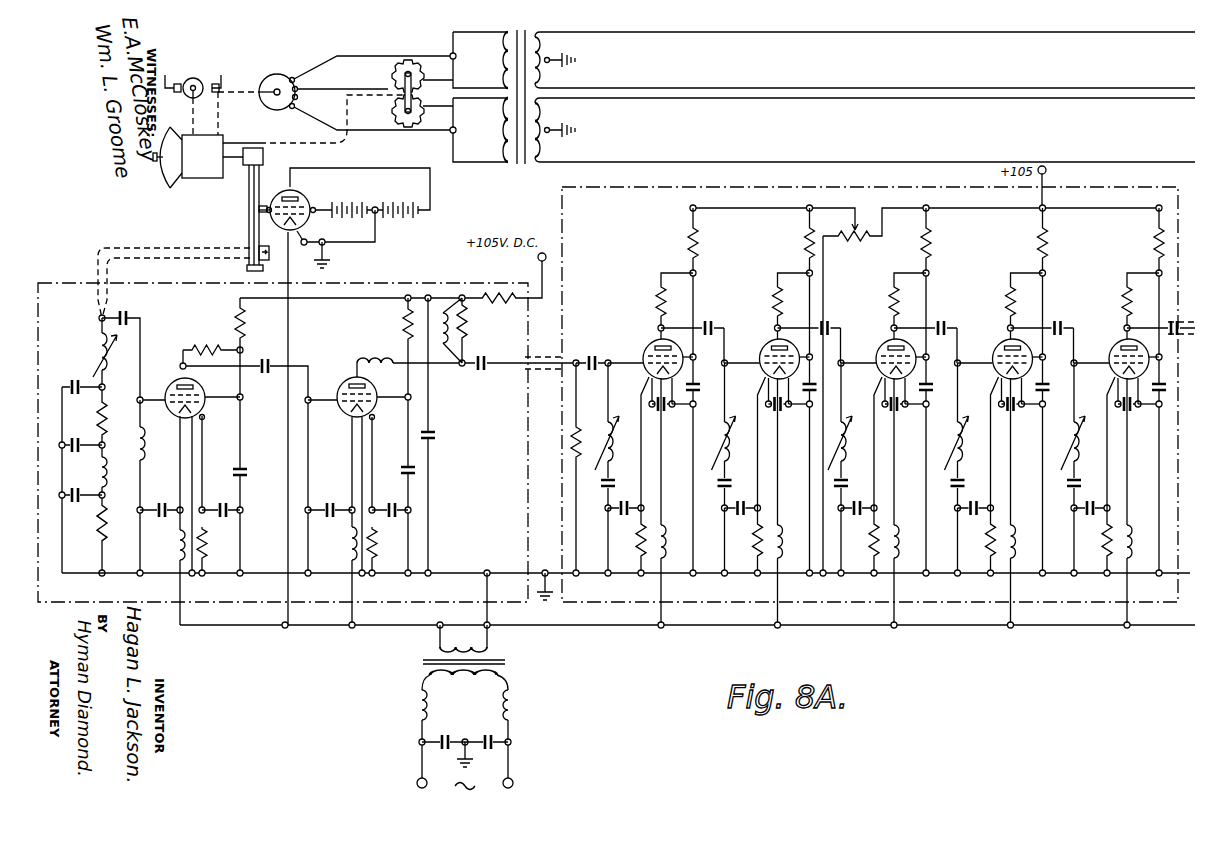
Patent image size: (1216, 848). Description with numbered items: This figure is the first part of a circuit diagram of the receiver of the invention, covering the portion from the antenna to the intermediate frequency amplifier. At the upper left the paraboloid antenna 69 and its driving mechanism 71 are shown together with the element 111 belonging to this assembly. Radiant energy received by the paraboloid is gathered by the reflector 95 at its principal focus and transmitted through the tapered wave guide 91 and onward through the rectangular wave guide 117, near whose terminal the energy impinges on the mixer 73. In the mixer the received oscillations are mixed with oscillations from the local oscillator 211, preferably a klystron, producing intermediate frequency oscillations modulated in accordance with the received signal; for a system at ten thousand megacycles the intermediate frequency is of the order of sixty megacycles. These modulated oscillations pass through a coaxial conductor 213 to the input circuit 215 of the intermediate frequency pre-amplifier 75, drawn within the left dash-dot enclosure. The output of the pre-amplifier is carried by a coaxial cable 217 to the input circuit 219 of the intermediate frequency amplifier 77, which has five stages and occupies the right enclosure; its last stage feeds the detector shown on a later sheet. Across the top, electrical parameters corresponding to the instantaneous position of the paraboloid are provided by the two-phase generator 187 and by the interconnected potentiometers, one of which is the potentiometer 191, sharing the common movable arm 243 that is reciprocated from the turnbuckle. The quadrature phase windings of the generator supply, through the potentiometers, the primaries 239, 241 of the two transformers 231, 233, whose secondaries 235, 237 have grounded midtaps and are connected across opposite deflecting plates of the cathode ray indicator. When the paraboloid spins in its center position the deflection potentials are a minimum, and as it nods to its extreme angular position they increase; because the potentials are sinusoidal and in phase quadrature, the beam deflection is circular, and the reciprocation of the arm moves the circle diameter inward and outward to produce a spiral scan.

The pickup transmitter 111 is at (193, 77).
The driving mechanism 71 is at (245, 69).
The two-phase generator 187 is at (287, 67).
The potentiometer 191 is at (383, 70).
The common movable arm 243 is at (386, 108).
The primary winding 241 is at (503, 61).
The primary winding 239 is at (503, 134).
The transformer 233 is at (540, 31).
The secondary winding 237 is at (550, 79).
The secondary winding 235 is at (550, 150).
The transformer 231 is at (525, 192).
The reflector 95 is at (160, 129).
The tapered wave guide 91 is at (163, 171).
The antenna 69 is at (176, 185).
The rectangular wave guide 117 is at (264, 153).
The local oscillator 211 is at (308, 196).
The coaxial conductor 213 is at (172, 239).
The mixer 73 is at (248, 248).
The input circuit 215 is at (176, 450).
The intermediate frequency pre-amplifier 75 is at (246, 598).
The coaxial cable 217 is at (539, 353).
The intermediate frequency amplifier 77 is at (842, 599).
The input circuit 219 is at (646, 374).